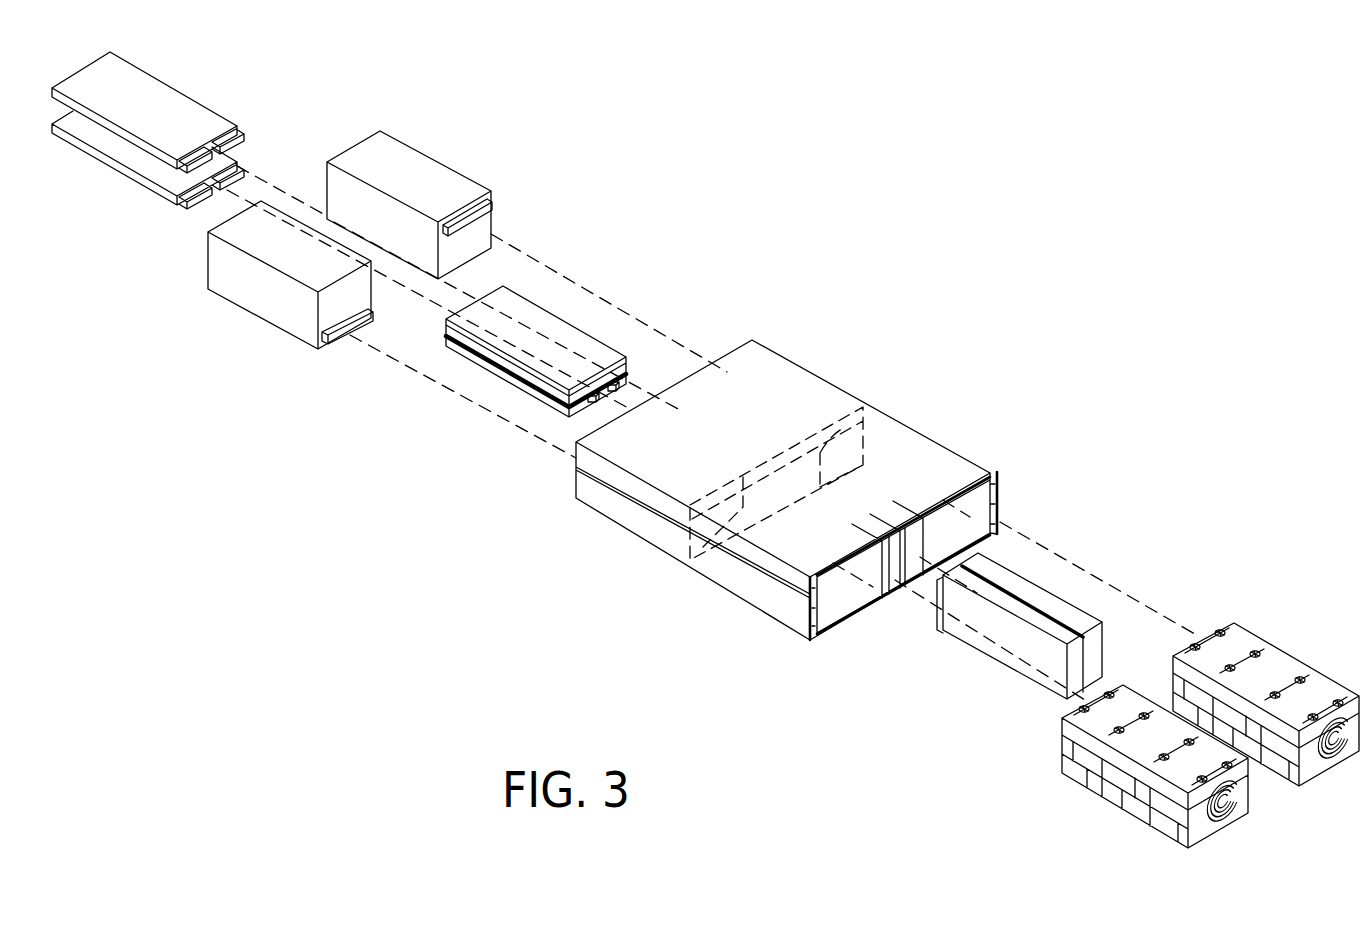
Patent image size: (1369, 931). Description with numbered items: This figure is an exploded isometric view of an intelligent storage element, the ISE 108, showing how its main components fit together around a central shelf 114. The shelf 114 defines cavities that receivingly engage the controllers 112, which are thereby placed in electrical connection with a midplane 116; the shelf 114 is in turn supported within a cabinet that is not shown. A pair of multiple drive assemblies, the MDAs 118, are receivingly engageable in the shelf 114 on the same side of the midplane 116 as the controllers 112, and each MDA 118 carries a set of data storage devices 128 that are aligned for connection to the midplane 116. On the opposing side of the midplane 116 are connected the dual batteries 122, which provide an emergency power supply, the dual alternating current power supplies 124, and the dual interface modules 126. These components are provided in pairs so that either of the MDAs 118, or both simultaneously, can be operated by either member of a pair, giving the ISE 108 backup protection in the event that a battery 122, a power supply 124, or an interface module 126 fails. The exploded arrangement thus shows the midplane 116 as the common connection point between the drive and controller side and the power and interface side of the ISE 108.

The intelligent storage element (ISE) 108 is at (843, 175).
The controllers 112 is at (1055, 605).
The shelf 114 is at (633, 538).
The midplane 116 is at (785, 463).
The multiple drive assemblies (MDAs) 118 is at (1164, 701).
The dual batteries 122 is at (530, 313).
The dual alternating current power supplies 124 is at (403, 175).
The dual interface modules 126 is at (173, 108).
The data storage devices 128 is at (1238, 627).